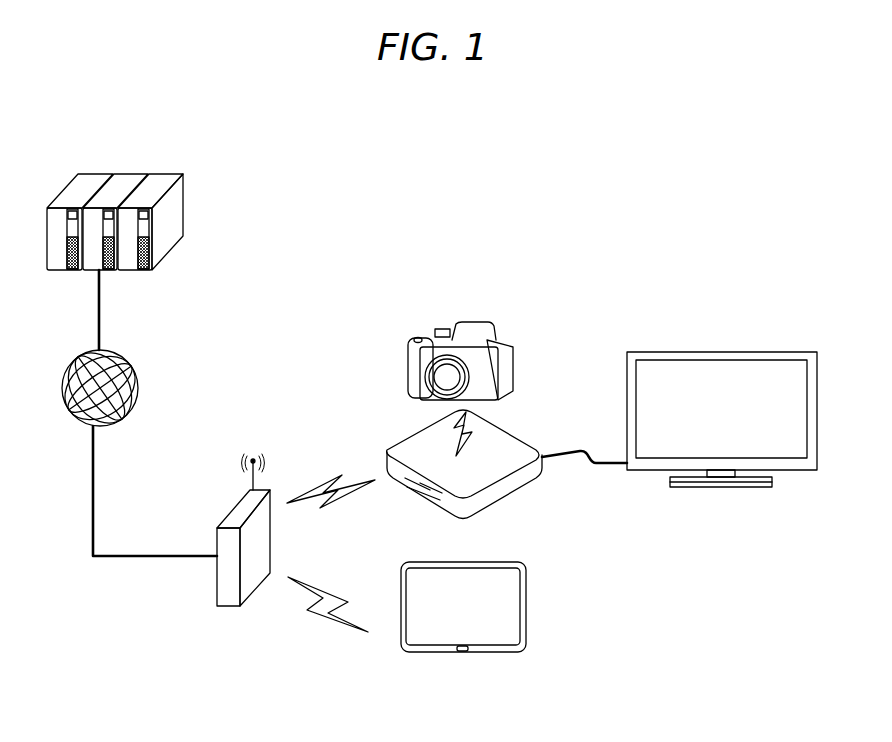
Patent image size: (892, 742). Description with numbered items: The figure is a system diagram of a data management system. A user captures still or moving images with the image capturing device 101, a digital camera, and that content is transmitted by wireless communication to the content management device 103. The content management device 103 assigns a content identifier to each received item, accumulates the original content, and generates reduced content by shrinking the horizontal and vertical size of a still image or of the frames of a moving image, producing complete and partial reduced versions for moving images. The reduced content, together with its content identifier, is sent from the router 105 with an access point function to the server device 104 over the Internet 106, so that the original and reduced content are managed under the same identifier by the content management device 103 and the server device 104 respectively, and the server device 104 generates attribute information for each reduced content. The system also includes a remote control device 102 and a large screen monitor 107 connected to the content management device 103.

The image capturing device 101 is at (477, 321).
The remote control device 102 is at (527, 607).
The content management device 103 is at (535, 483).
The server device 104 is at (183, 220).
The router 105 is at (248, 608).
The Internet 106 is at (138, 383).
The large screen monitor 107 is at (730, 488).